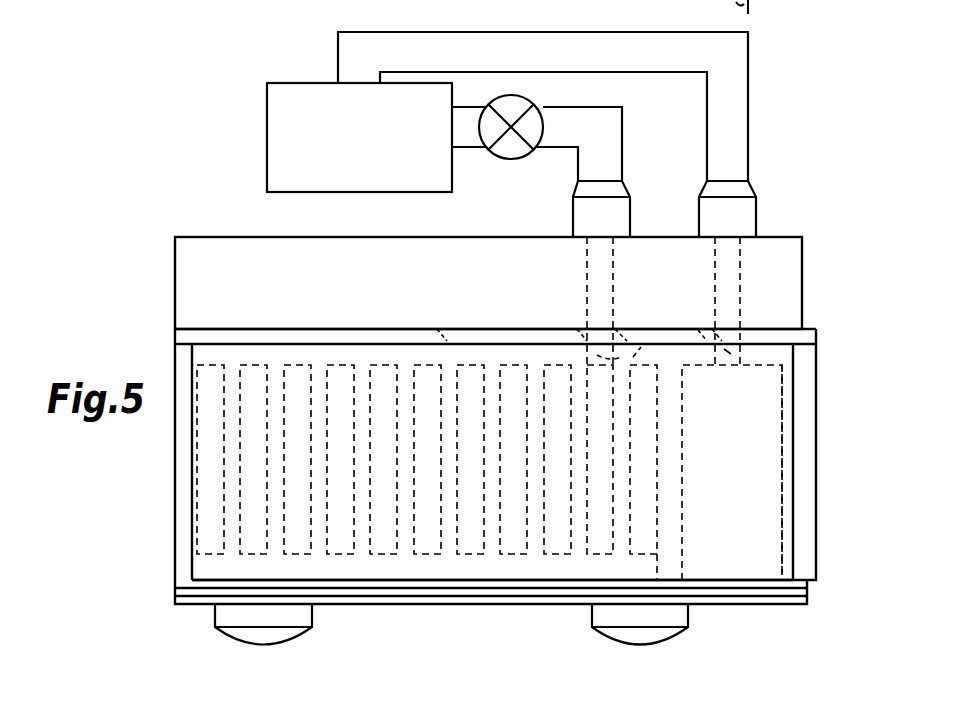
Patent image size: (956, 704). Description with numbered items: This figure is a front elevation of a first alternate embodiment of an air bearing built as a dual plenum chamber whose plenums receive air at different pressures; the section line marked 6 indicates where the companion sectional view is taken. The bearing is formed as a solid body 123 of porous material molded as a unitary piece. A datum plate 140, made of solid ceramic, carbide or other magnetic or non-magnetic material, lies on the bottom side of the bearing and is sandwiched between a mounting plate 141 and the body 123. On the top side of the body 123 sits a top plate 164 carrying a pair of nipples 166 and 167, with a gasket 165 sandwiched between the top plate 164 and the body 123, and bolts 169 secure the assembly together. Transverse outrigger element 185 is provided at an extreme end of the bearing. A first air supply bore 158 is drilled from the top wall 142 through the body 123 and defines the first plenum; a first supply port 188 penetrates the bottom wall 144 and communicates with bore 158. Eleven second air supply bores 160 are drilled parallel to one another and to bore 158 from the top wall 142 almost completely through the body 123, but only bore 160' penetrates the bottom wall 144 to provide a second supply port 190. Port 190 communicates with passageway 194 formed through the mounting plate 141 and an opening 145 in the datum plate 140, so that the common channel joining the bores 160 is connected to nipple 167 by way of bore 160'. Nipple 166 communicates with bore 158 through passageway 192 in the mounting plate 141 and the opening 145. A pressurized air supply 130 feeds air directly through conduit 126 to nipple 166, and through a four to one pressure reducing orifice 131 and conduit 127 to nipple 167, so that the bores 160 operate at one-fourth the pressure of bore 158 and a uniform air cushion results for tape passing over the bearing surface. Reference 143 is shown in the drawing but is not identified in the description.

The conduit 126 is at (452, 32).
The conduit 127 is at (595, 128).
The pressurized air supply 130 is at (267, 178).
The pressure reducing orifice 131 is at (518, 153).
The nipple 167 is at (600, 216).
The nipple 166 is at (733, 212).
The mounting plate 141 is at (341, 285).
The datum plate 140 is at (287, 337).
The bottom wall 144 is at (450, 337).
The gasket 165 is at (212, 585).
The top plate 164 is at (422, 592).
The top wall 142 is at (543, 580).
The transverse outrigger element 185 is at (800, 430).
The bolts 169 is at (262, 636).
The second air supply bores 160 is at (427, 516).
The bore 160' is at (615, 525).
The passageway 194 is at (613, 285).
The passageway 192 is at (722, 278).
The seal 143 is at (743, 327).
The first supply port 188 is at (731, 355).
The first air supply bore 158 is at (742, 408).
The solid body 123 is at (782, 473).
The opening 145 is at (577, 326).
The second supply port 190 is at (647, 331).
The section line 6- 6 is at (150, 580).